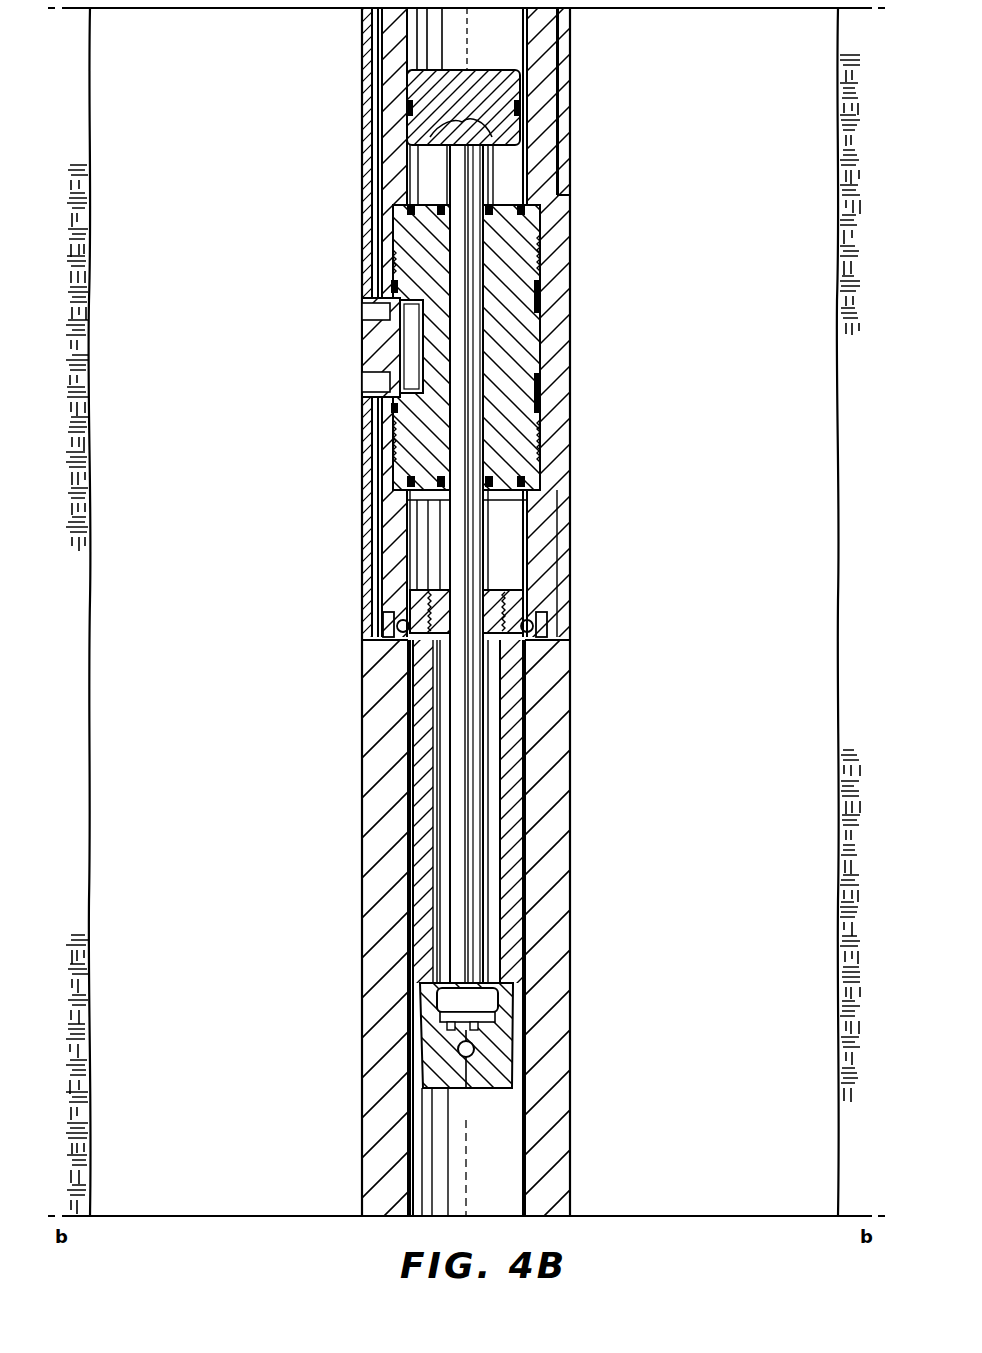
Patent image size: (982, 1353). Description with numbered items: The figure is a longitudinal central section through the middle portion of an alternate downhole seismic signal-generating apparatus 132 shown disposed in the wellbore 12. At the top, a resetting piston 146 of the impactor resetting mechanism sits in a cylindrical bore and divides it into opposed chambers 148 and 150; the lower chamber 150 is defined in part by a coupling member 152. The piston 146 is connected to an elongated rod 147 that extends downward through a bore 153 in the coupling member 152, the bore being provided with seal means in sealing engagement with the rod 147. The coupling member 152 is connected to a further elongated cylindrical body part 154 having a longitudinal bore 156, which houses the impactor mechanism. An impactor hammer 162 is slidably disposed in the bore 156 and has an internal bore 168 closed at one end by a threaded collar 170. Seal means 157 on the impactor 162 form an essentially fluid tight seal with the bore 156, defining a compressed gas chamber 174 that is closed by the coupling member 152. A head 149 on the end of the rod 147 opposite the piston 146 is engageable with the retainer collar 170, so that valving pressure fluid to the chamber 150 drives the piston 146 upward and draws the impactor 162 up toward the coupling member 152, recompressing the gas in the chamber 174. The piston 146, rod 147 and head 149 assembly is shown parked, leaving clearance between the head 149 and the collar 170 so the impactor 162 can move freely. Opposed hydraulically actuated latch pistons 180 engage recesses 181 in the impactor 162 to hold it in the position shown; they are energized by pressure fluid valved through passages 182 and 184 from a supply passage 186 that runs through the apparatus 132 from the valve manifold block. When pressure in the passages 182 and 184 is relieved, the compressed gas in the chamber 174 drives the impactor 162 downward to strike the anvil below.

The wellbore 12 is at (92, 377).
The downhole seismic signal-generating apparatus 132 is at (606, 416).
The piston 146 is at (520, 72).
The rod 147 is at (480, 446).
The chamber 148 is at (486, 53).
The head 149 is at (497, 1003).
The chamber 150 is at (395, 171).
The coupling member 152 is at (570, 349).
The bore 153 is at (478, 262).
The body part 154 is at (570, 716).
The bore 156 is at (525, 1150).
The seal means 157 is at (520, 660).
The impactor hammer 162 is at (520, 910).
The bore 168 is at (492, 810).
The threaded collar 170 is at (505, 594).
The compressed gas chamber 174 is at (512, 512).
The latch members 180 is at (541, 621).
The recesses 181 is at (394, 616).
The passage 182 is at (376, 467).
The passage 184 is at (552, 481).
The supply passage 186 is at (368, 83).